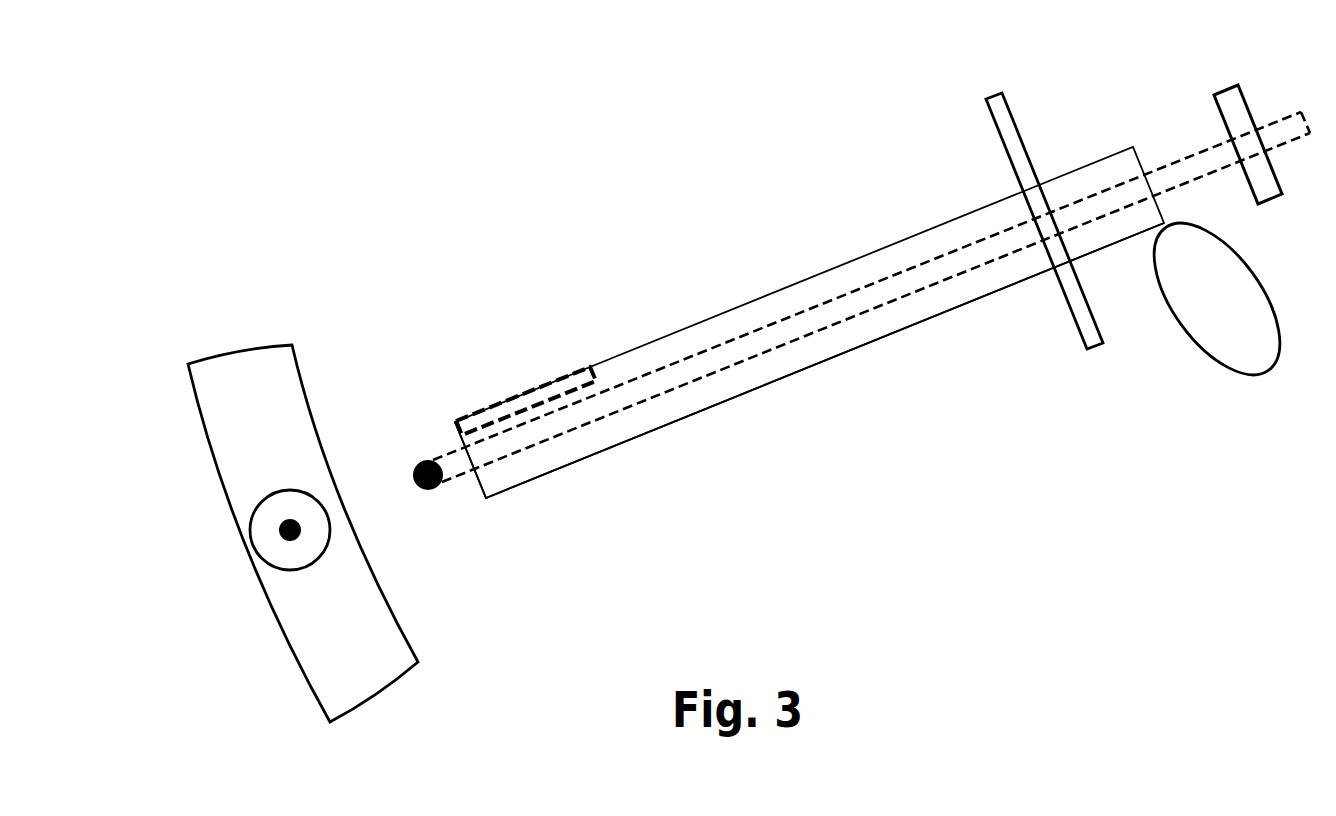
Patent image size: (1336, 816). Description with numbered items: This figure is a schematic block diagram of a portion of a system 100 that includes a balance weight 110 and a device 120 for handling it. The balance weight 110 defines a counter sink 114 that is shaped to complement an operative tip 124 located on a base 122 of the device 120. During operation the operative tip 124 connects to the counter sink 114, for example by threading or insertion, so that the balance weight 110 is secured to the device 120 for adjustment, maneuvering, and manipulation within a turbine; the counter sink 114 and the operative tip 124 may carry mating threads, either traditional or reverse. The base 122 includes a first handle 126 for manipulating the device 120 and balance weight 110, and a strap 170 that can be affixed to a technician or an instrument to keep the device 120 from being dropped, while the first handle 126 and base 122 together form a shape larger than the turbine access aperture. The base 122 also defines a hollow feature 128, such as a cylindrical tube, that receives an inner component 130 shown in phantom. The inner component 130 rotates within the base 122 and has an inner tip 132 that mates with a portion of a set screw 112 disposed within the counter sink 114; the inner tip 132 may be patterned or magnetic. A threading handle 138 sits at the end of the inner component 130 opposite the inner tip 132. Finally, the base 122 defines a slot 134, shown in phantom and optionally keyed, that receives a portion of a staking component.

The system 100 is at (228, 108).
The balance weight 110 is at (273, 416).
The set screw 112 is at (288, 528).
The counter sink 114 is at (262, 560).
The device 120 is at (697, 227).
The base 122 is at (713, 407).
The operative tip 124 is at (511, 528).
The first handle 126 is at (1002, 154).
The hollow feature 128 is at (1007, 297).
The inner component 130 is at (682, 358).
The inner tip 132 is at (427, 462).
The slot 134 is at (516, 390).
The threading handle 138 is at (1230, 102).
The strap 170 is at (1217, 352).